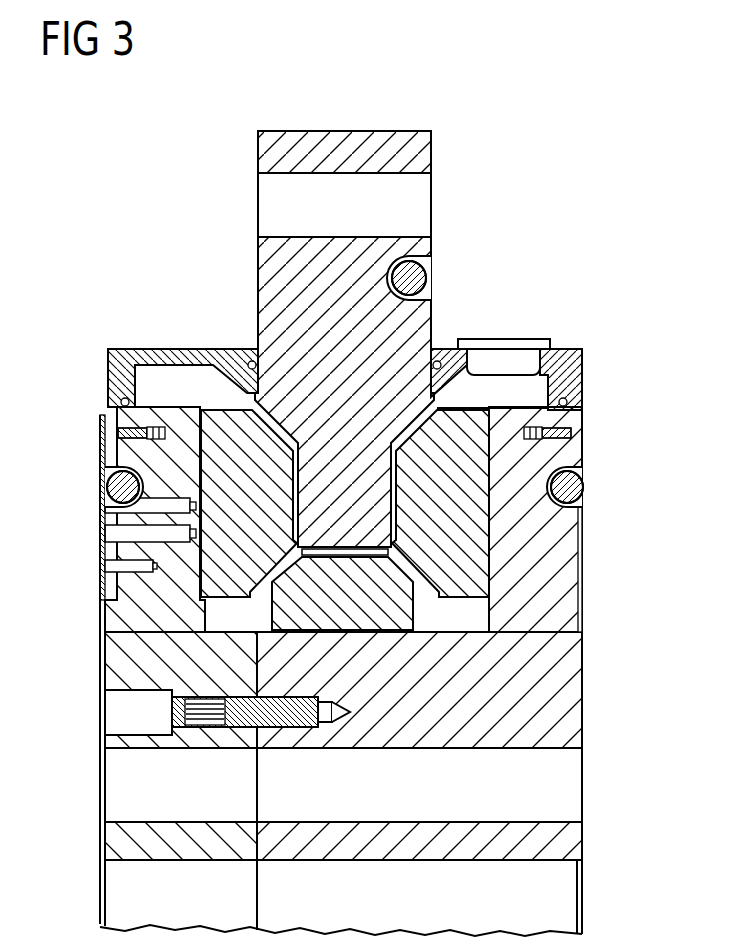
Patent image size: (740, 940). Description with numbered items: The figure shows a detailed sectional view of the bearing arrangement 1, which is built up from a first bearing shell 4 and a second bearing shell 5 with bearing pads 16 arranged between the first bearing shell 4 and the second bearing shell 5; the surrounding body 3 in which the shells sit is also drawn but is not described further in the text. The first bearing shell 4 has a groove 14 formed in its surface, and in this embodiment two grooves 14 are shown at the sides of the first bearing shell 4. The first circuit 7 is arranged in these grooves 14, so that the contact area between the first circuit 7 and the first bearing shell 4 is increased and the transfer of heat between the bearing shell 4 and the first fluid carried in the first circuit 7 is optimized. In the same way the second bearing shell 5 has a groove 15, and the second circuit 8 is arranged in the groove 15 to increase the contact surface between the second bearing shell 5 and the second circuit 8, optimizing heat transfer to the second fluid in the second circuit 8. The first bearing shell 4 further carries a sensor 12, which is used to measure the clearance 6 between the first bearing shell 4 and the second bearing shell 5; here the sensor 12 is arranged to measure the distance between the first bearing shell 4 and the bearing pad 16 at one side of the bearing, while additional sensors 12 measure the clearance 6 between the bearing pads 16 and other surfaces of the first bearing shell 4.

The bearing arrangement 1 is at (116, 192).
The housing 3 is at (584, 688).
The first bearing shell 4 is at (565, 545).
The second bearing shell 5 is at (268, 155).
The clearance 6 is at (203, 465).
The first circuit 7 is at (110, 488).
The second circuit 8 is at (415, 282).
The sensor 12 is at (102, 545).
The groove 14 is at (108, 507).
The groove 15 is at (420, 302).
The bearing pad 16 is at (218, 565).